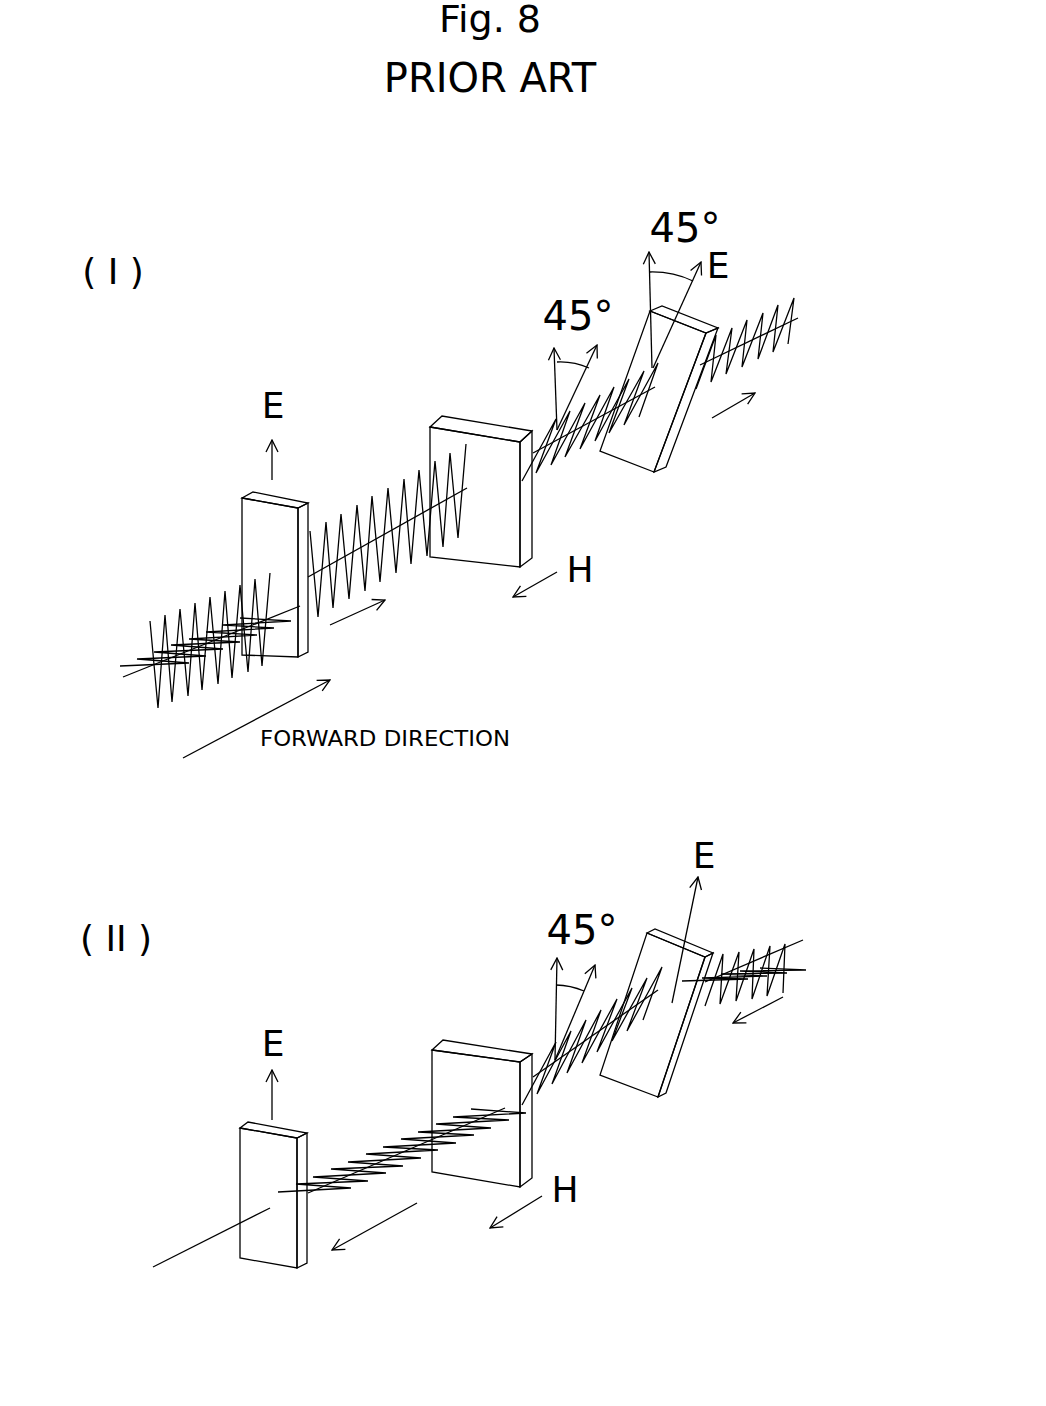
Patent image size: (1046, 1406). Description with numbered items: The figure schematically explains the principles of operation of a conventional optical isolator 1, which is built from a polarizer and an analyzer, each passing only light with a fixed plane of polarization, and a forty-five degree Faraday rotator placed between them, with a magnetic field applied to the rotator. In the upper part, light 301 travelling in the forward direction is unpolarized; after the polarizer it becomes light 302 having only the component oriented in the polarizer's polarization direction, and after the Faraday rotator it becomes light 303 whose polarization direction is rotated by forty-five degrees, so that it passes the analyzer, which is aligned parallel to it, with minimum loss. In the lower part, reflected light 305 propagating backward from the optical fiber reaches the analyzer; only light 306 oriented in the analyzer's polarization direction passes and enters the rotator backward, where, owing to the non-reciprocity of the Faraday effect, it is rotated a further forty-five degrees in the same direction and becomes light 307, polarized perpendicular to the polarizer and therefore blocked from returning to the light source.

The optical isolator 1 is at (774, 234).
The light 301 is at (210, 580).
The light 302 is at (380, 480).
The light 303 is at (570, 410).
The light 305 is at (783, 980).
The light 306 is at (577, 1085).
The light 307 is at (412, 1167).